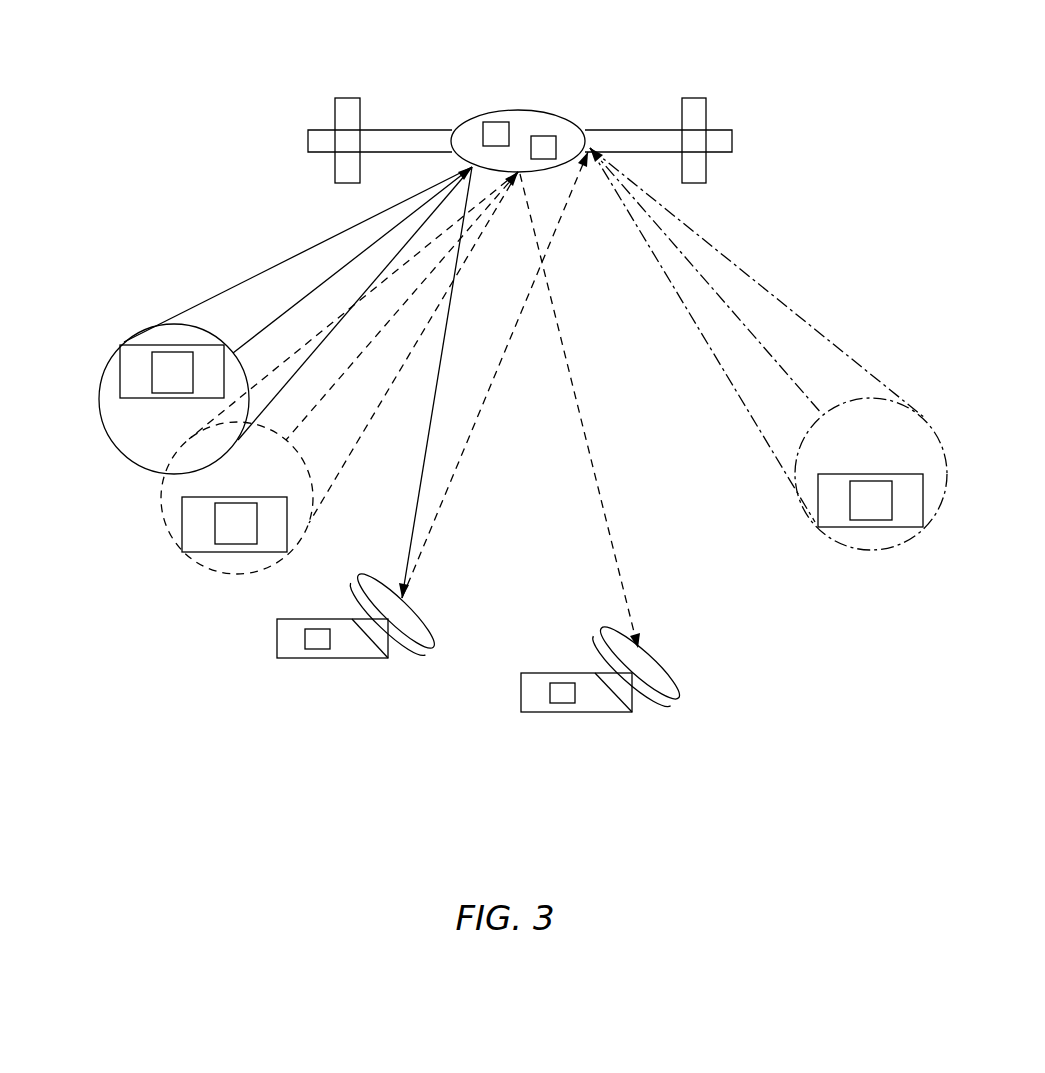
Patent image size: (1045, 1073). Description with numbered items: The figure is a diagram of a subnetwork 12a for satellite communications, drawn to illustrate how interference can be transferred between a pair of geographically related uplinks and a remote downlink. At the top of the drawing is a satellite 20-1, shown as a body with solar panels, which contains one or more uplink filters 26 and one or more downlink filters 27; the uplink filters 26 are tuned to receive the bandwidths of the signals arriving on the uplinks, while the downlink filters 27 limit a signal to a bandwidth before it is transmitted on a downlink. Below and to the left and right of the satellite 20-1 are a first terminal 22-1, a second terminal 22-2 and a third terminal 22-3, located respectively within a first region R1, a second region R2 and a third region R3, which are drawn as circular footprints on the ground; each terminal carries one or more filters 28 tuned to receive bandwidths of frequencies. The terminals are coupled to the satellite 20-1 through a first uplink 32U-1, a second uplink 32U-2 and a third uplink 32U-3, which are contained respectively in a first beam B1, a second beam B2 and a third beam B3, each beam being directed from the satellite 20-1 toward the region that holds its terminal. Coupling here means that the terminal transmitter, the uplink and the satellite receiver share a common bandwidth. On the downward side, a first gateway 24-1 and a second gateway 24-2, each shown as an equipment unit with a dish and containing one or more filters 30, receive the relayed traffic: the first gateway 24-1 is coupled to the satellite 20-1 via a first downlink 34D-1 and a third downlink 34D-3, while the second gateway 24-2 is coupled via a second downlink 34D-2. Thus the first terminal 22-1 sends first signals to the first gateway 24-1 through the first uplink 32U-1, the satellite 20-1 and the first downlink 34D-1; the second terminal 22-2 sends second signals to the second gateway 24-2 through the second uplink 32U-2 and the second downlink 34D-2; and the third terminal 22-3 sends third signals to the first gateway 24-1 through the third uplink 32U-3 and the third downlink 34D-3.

The subnetwork 12a is at (205, 85).
The satellite 20-1 is at (521, 110).
The uplink filters 26 is at (493, 121).
The downlink filters 27 is at (545, 136).
The first terminal 22-1 is at (118, 368).
The second terminal 22-2 is at (182, 515).
The third terminal 22-3 is at (838, 530).
The filters 28 is at (163, 351).
The first region R1 is at (101, 422).
The second region R2 is at (166, 535).
The third region R3 is at (873, 398).
The first beam B1 is at (237, 305).
The second beam B2 is at (322, 457).
The third beam B3 is at (823, 365).
The first uplink 32U-1 is at (335, 274).
The second uplink 32U-2 is at (337, 372).
The third uplink 32U-3 is at (743, 321).
The first downlink 34D-1 is at (412, 556).
The second downlink 34D-2 is at (570, 377).
The third downlink 34D-3 is at (480, 413).
The first gateway 24-1 is at (350, 660).
The second gateway 24-2 is at (595, 715).
The filters 30 is at (313, 660).